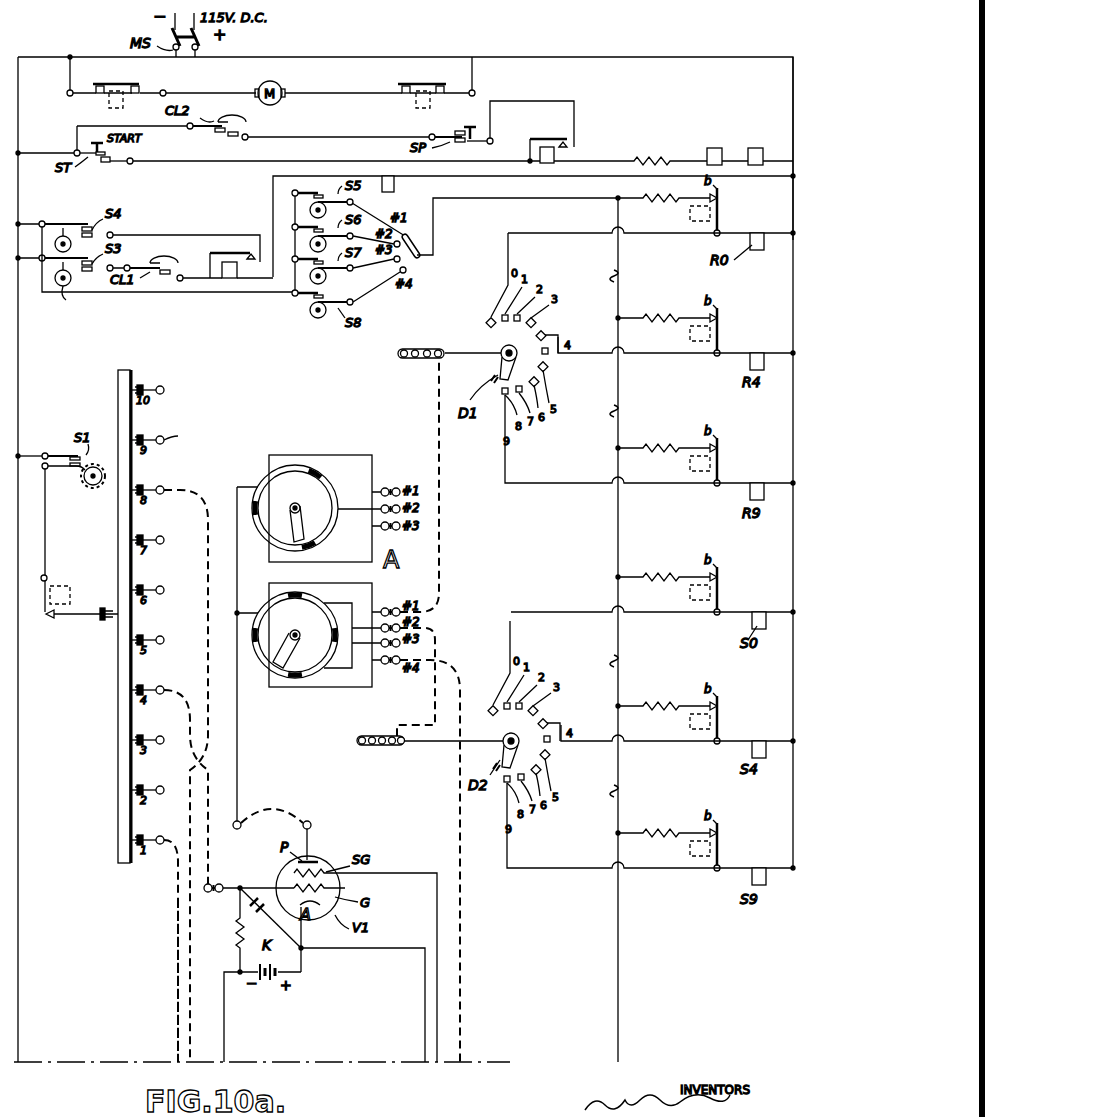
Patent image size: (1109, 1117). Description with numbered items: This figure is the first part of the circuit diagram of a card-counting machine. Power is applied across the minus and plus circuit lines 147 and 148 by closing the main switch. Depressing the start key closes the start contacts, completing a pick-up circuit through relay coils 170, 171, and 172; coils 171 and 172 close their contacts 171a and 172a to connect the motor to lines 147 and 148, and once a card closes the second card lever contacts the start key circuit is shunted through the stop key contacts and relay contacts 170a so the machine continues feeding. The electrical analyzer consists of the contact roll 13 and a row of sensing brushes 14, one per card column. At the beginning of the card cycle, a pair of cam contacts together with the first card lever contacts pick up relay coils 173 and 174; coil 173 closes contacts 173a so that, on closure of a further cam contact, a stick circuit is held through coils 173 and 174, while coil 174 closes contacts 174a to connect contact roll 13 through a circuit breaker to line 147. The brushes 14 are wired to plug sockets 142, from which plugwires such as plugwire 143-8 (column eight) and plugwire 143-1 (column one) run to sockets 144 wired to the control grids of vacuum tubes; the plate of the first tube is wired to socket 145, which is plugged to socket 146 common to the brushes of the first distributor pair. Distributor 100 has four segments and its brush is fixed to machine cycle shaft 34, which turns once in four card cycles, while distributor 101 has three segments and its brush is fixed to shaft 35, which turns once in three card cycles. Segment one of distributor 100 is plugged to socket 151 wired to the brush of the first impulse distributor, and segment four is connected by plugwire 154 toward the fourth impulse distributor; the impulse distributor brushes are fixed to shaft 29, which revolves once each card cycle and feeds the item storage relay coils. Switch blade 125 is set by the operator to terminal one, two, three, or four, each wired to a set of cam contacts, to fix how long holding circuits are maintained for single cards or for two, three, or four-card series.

The contact roll 13 is at (118, 766).
The sensing brushes 14 is at (139, 484).
The shaft 29 is at (516, 349).
The machine cycle shaft 34 is at (314, 207).
The shaft 35 is at (312, 282).
The distributor 100 is at (312, 600).
The distributor 101 is at (312, 472).
The switch blade 125 is at (414, 246).
The plug sockets 142 is at (152, 872).
The plugwire 143-1 is at (176, 952).
The plugwire 143-8 is at (207, 540).
The socket 144 is at (209, 888).
The socket 145 is at (312, 830).
The socket 146 is at (244, 822).
The circuit line side 147 is at (20, 772).
The current line 148 is at (793, 91).
The socket 151 is at (418, 360).
The plugwire 154 is at (460, 832).
The relay coil 170 is at (556, 154).
The relay contacts 170a is at (555, 138).
The relay coil 171 is at (707, 153).
The relay contacts 171a is at (140, 86).
The relay coil 172 is at (754, 148).
The relay contacts 172a is at (448, 84).
The relay coil 173 is at (229, 279).
The relay contacts 173a is at (243, 250).
The relay coil 174 is at (396, 185).
The relay contacts 174a is at (53, 622).